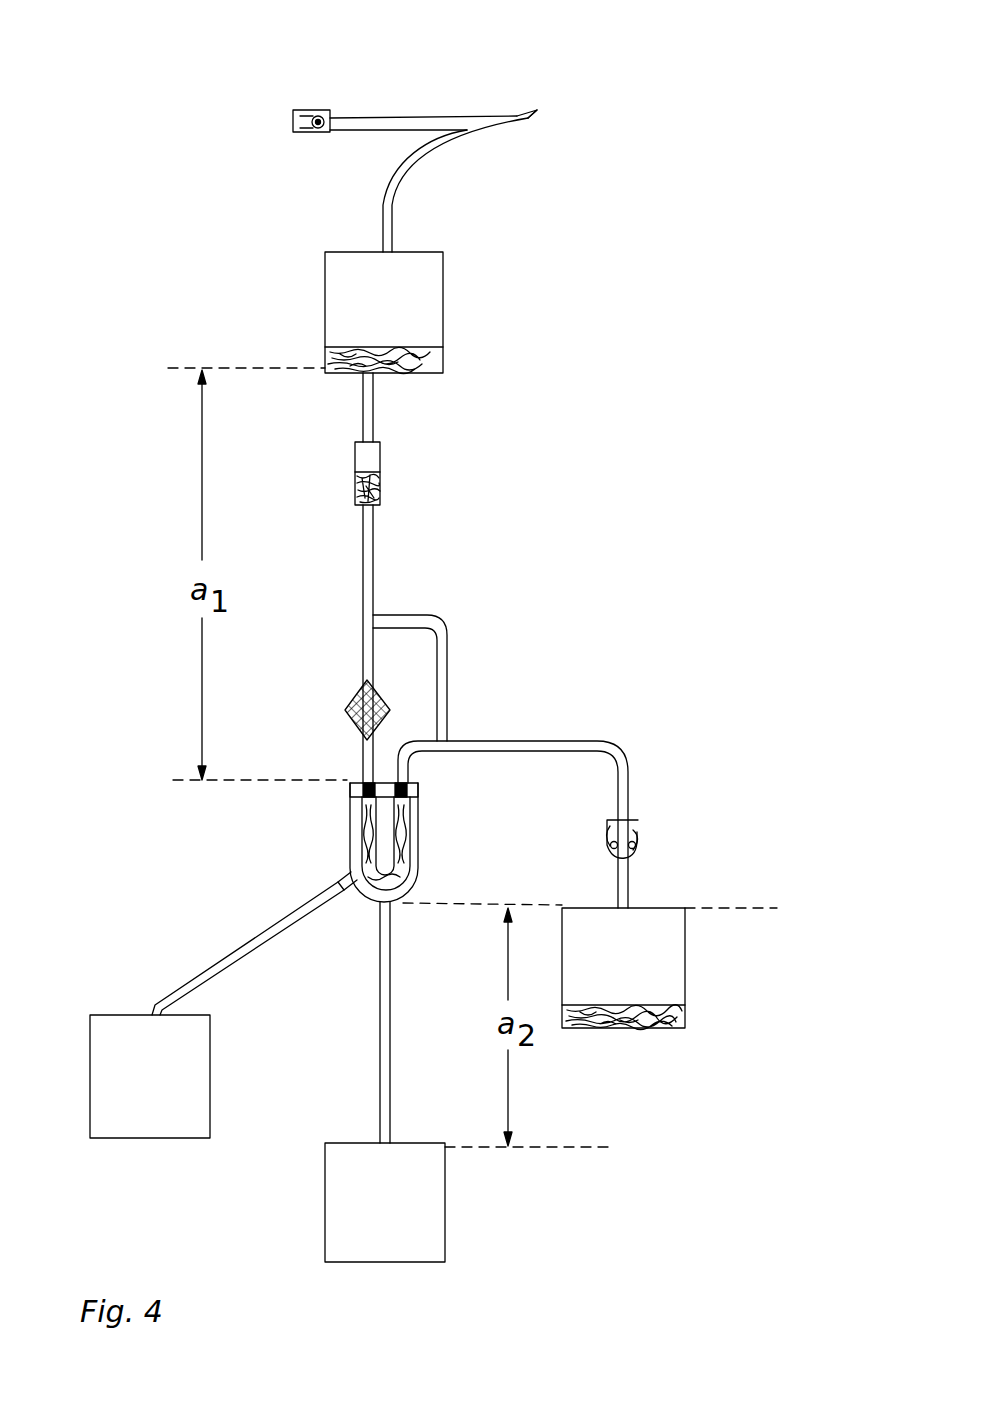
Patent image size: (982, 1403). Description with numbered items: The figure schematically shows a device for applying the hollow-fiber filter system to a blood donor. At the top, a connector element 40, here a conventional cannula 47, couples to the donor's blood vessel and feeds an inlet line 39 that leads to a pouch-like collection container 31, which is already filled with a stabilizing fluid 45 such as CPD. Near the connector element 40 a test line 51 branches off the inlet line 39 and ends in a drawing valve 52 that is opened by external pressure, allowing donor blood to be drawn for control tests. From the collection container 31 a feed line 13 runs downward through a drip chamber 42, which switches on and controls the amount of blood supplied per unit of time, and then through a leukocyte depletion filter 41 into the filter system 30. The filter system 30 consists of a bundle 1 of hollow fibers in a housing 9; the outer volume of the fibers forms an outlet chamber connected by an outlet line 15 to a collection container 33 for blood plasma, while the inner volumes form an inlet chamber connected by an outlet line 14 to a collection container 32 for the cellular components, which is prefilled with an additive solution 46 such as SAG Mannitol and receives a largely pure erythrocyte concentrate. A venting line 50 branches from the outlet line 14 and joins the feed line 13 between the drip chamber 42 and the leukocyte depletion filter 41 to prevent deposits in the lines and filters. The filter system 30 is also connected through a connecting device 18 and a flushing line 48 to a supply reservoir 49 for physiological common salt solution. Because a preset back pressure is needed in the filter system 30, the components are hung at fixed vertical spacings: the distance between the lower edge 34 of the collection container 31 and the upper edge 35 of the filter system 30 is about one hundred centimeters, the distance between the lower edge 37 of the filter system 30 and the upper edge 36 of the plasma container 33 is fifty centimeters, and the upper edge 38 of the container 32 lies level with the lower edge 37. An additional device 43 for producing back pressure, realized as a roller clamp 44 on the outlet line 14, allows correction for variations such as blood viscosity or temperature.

The bundle of hollow fibers 1 is at (400, 817).
The housing 9 is at (418, 856).
The feed line 13 is at (363, 420).
The outlet line of inlet chamber 14 is at (555, 741).
The outlet line of outlet chamber 15 is at (380, 1037).
The connecting device 18 is at (337, 883).
The filter system 30 is at (350, 818).
The collection container 31 is at (382, 287).
The collection container for receiving the cellular components 32 is at (637, 968).
The collection container for receiving blood plasma 33 is at (397, 1218).
The lower edge of collection container 34 is at (227, 368).
The upper edge of filter system 35 is at (190, 777).
The upper edge of collection container for blood plasma 36 is at (572, 1150).
The lower edge of filter system 37 is at (442, 906).
The upper edge of collection container for cellular components 38 is at (757, 908).
The inlet line 39 is at (383, 183).
The connector element 40 is at (517, 112).
The leukocyte depletion filter 41 is at (353, 700).
The drip chamber 42 is at (353, 492).
The device for producing back pressure 43 is at (701, 777).
The roller clamp 44 is at (635, 818).
The stabilizing fluid 45 is at (393, 365).
The additive solution 46 is at (660, 1025).
The cannula 47 is at (531, 116).
The flushing line 48 is at (250, 942).
The supply reservoir 49 is at (147, 1055).
The venting line 50 is at (437, 612).
The test line 51 is at (392, 116).
The drawing valve 52 is at (293, 112).